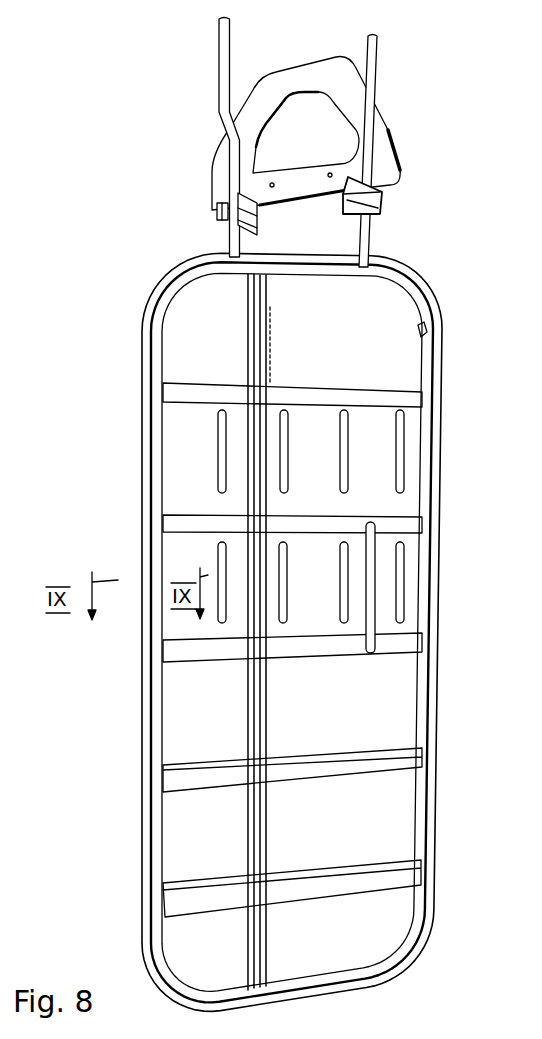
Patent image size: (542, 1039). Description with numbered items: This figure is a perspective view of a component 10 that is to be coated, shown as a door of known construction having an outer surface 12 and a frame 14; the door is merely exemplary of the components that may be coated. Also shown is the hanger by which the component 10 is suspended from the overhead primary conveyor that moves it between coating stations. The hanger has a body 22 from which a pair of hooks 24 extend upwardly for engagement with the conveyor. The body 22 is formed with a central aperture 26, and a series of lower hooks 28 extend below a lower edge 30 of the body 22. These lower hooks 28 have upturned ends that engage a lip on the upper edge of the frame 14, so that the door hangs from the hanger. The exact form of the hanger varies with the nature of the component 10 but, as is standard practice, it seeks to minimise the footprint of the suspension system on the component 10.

The component 10 is at (278, 632).
The outer surface 12 is at (185, 468).
The frame 14 is at (438, 343).
The body 22 is at (294, 161).
The hooks 24 is at (219, 70).
The central aperture 26 is at (255, 147).
The lower hooks 28 is at (228, 233).
The lower edge 30 is at (297, 183).